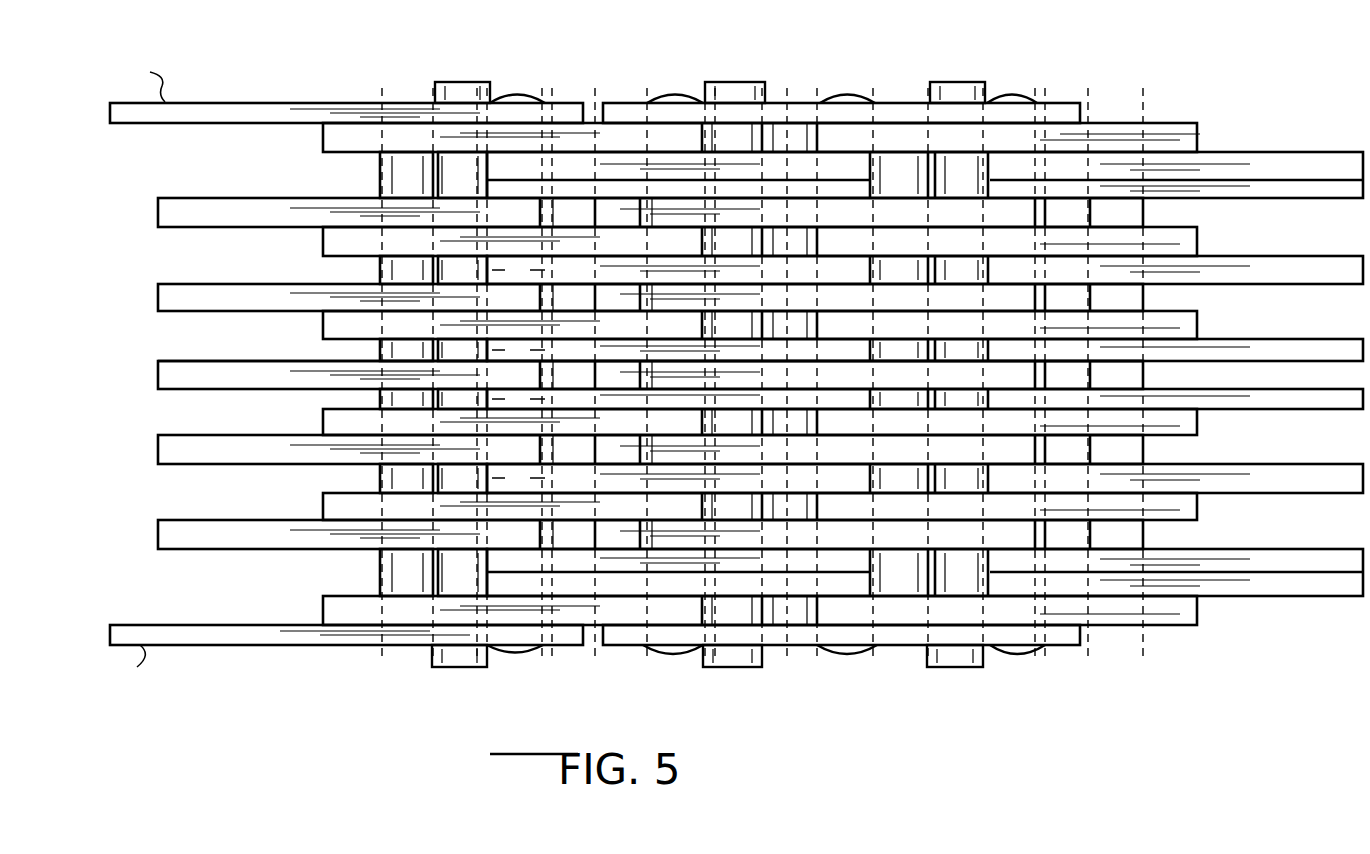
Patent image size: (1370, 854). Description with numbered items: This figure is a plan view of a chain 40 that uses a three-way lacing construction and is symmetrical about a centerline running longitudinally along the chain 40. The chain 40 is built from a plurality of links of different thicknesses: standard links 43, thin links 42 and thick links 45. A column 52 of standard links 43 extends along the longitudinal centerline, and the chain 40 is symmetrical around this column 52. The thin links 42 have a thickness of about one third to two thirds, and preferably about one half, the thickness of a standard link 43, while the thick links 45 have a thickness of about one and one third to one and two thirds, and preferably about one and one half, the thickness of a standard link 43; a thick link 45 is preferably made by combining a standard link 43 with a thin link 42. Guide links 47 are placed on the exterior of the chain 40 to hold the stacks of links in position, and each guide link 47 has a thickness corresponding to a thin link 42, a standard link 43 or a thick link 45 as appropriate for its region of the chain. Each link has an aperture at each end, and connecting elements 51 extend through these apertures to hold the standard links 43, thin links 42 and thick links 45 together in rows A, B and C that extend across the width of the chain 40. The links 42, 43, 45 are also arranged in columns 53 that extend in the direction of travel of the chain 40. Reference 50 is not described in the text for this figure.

The chain 40 is at (725, 390).
The thin link 42 is at (1297, 353).
The standard link 43 is at (615, 370).
The thick link 45 is at (1333, 168).
The guide link 47 is at (1067, 636).
The solder bump 50 is at (1012, 95).
The connecting element 51 is at (1120, 150).
The column of standard links 52 is at (158, 363).
The column 53 is at (325, 512).